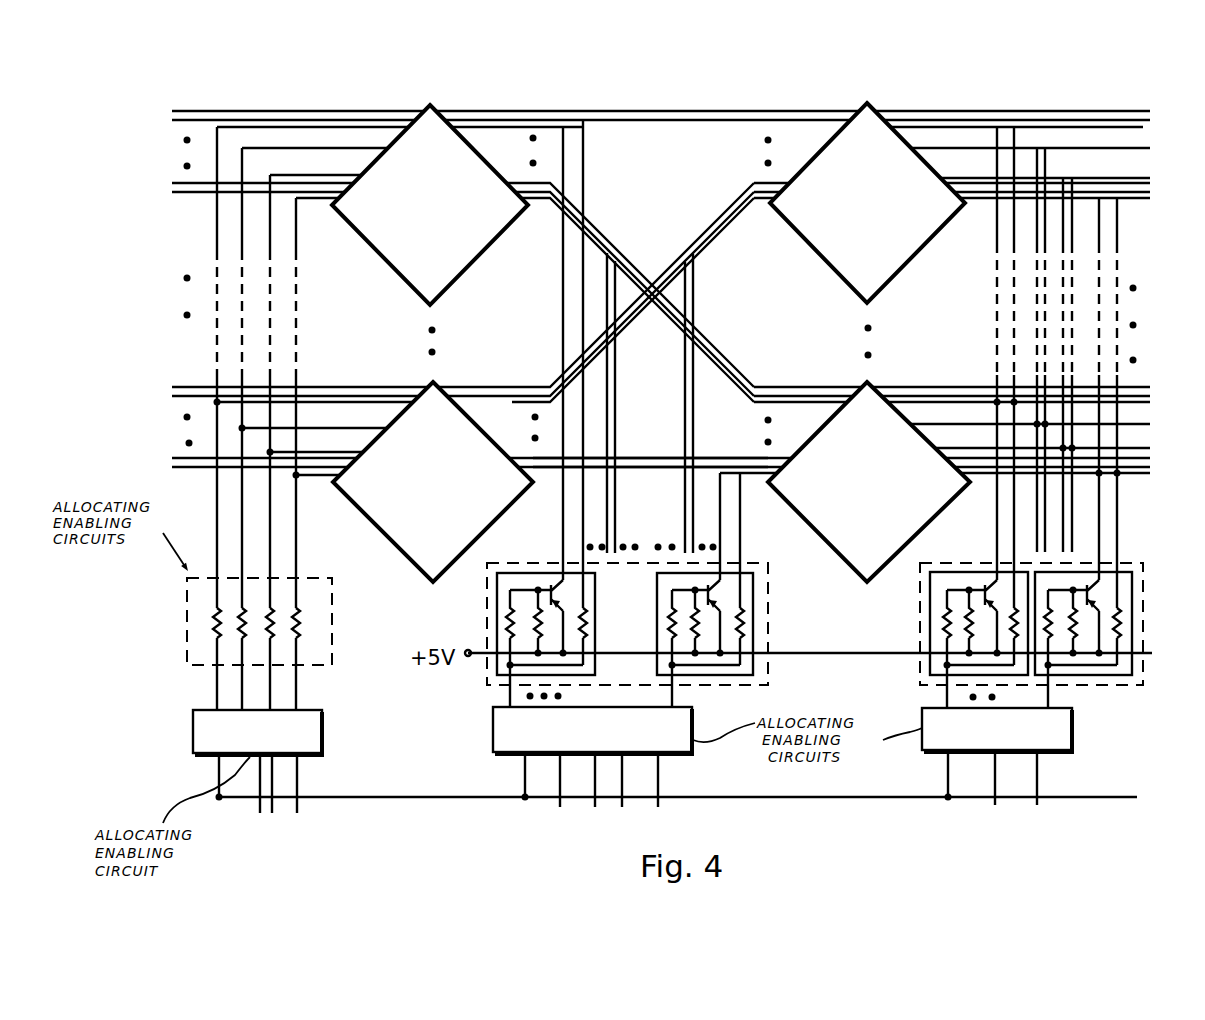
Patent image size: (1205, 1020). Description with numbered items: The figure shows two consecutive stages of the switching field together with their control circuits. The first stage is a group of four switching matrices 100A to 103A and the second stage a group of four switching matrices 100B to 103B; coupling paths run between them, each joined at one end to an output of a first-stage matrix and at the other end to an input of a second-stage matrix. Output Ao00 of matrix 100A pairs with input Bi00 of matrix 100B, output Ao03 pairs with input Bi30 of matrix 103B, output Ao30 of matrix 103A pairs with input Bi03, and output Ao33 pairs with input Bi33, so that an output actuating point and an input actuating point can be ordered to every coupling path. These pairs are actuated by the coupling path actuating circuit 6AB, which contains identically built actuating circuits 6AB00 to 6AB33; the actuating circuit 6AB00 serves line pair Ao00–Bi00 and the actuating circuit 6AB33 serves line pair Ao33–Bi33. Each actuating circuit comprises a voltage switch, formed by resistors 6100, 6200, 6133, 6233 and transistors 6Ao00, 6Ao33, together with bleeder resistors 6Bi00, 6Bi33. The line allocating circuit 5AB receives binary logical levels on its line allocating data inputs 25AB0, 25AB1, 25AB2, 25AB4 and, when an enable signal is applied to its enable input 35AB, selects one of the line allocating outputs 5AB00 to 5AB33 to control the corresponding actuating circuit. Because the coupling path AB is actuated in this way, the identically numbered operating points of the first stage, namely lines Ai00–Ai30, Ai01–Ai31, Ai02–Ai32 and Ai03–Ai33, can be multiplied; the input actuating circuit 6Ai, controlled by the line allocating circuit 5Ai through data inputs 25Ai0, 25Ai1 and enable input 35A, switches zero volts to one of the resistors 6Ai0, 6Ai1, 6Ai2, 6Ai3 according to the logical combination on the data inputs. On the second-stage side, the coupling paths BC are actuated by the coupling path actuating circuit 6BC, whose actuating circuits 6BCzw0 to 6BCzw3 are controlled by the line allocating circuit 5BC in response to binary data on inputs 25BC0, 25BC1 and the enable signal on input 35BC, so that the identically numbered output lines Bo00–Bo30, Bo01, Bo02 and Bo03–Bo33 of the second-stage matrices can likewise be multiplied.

The input line Ai00 is at (392, 127).
The input line Ai01 is at (384, 141).
The input line Ai02 is at (365, 172).
The input line Ai03 is at (332, 203).
The output line Ao00 is at (463, 129).
The output line Ao03 is at (536, 204).
The switching matrix 100A is at (456, 220).
The input line Bi00 is at (836, 122).
The input line Bi03 is at (763, 203).
The output line Bo00 is at (905, 127).
The output line Bo01 is at (914, 143).
The output line Bo02 is at (928, 171).
The output line Bo03 is at (972, 208).
The switching matrix 100B is at (838, 220).
The input line Ai30 is at (400, 402).
The input line Ai31 is at (383, 425).
The input line Ai32 is at (362, 452).
The input line Ai33 is at (334, 480).
The output line Ao30 is at (470, 402).
The output line Ao33 is at (536, 480).
The switching matrix 103A is at (406, 498).
The input line Bi30 is at (835, 402).
The input line Bi33 is at (762, 483).
The output line Bo30 is at (905, 402).
The output line Bo33 is at (972, 483).
The switching matrix 103B is at (835, 498).
The input actuating circuit 6Ai is at (323, 580).
The resistor 6Ai0 is at (218, 623).
The resistor 6Ai1 is at (241, 640).
The resistor 6Ai2 is at (297, 620).
The resistor 6Ai3 is at (272, 640).
The coupling path actuating circuit 6AB is at (770, 585).
The line allocating circuit 5Ai is at (225, 749).
The line allocating enable input 35A is at (215, 757).
The line allocating data input 25Ai0 is at (298, 757).
The line allocating data input 25Ai1 is at (273, 800).
The transistor 6Ao00 is at (551, 600).
The transistor 6Ao33 is at (710, 588).
The resistor 6100 is at (537, 620).
The resistor 6200 is at (508, 630).
The bleeder resistor 6Bi00 is at (585, 625).
The resistor 6133 is at (696, 640).
The resistor 6233 is at (674, 614).
The bleeder resistor 6Bi33 is at (745, 623).
The actuating circuit 6AB00 is at (496, 672).
The actuating circuit 6AB33 is at (755, 667).
The line allocating output 5AB00 is at (508, 698).
The line allocating output 5AB33 is at (678, 697).
The line allocating circuit 5AB is at (620, 741).
The enable input 35AB is at (523, 753).
The line allocating data input 25AB0 is at (660, 753).
The line allocating data input 25AB1 is at (626, 757).
The line allocating data input 25AB2 is at (594, 755).
The line allocating data input 25AB4 is at (558, 755).
The coupling path actuating circuit 6BC is at (1137, 566).
The actuating circuit 6BCzw0 is at (940, 668).
The actuating circuit 6BCzw3 is at (1128, 672).
The line allocating circuit 5BC is at (970, 743).
The line allocating enable input 35BC is at (946, 753).
The line allocating data input 25BC0 is at (1040, 753).
The line allocating data input 25BC1 is at (990, 755).